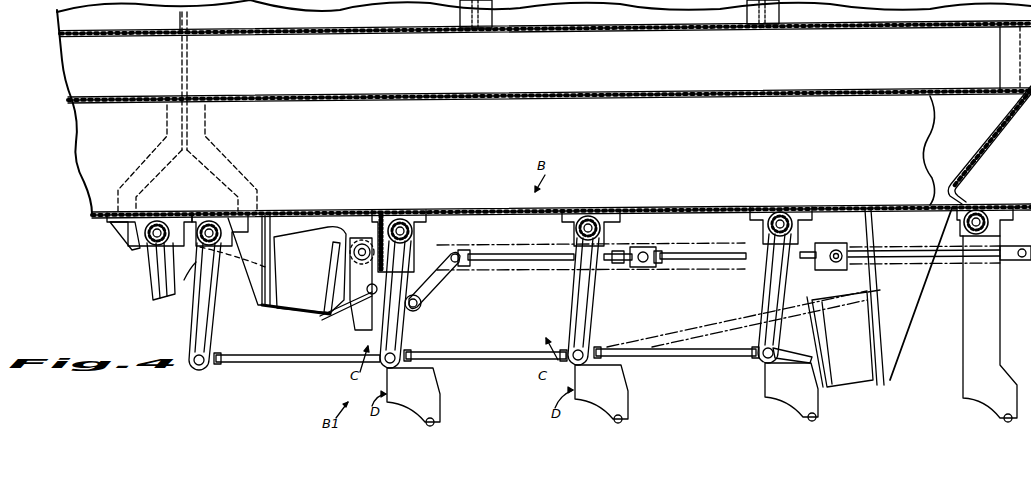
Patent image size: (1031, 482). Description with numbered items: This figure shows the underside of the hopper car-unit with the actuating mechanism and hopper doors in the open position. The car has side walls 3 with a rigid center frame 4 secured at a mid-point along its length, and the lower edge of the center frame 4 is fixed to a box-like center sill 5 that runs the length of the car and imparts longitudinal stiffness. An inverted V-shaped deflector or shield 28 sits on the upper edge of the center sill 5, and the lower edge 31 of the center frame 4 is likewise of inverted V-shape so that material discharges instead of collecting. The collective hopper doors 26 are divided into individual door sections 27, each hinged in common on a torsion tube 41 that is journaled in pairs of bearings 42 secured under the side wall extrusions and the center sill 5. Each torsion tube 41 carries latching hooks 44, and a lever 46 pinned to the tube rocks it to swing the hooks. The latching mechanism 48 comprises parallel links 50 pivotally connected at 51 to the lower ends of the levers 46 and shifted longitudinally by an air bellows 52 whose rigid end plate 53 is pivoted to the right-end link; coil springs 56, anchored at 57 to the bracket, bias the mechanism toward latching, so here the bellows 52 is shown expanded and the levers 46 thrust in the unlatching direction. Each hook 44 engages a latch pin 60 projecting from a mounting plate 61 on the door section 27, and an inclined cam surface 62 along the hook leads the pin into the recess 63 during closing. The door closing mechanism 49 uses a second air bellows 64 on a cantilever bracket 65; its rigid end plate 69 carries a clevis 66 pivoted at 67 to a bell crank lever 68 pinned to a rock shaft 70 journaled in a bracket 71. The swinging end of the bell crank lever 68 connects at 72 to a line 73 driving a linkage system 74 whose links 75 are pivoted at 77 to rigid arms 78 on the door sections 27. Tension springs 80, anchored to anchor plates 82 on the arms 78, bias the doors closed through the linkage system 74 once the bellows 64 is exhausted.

The side walls 3 is at (578, 14).
The center frame 4 is at (193, 40).
The center sill 5 is at (613, 100).
The hopper doors 26 is at (425, 368).
The hopper door section 27 is at (610, 362).
The deflector or shield 28 is at (688, 30).
The V-shaped lower edge 31 is at (206, 150).
The torsion tube 41 is at (160, 222).
The bearings 42 is at (392, 222).
The latching hooks 44 is at (183, 280).
The levers 46 is at (152, 272).
The latching mechanism 48 is at (212, 366).
The door closing mechanism 49 is at (656, 270).
The parallel links 50 is at (292, 360).
The pivot connection 51 is at (195, 366).
The air bellows 52 is at (880, 362).
The rigid end plate 53 is at (834, 386).
The coil springs 56 is at (718, 318).
The spring anchor 57 is at (880, 296).
The latch pin 60 is at (436, 424).
The mounting plate 61 is at (440, 402).
The inclined cam surface 62 is at (228, 278).
The recess 63 is at (270, 252).
The air bellows 64 is at (310, 270).
The cantilever bracket 65 is at (120, 230).
The clevis 66 is at (326, 318).
The pivot connection 67 is at (371, 296).
The bell crank lever 68 is at (345, 286).
The rigid end plate 69 is at (318, 320).
The rock shaft 70 is at (366, 242).
The bracket 71 is at (372, 225).
The pivot connection 72 is at (430, 306).
The line 73 is at (446, 292).
The linkage system 74 is at (514, 266).
The link 75 is at (532, 256).
The pivot connection 77 is at (650, 256).
The rigid arm 78 is at (645, 247).
The tension springs 80 is at (727, 240).
The anchor plates 82 is at (826, 246).